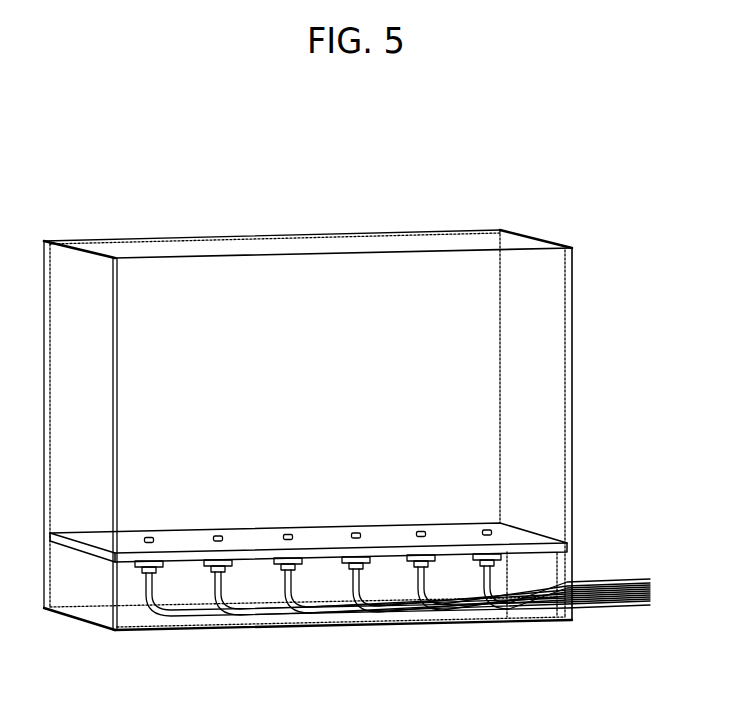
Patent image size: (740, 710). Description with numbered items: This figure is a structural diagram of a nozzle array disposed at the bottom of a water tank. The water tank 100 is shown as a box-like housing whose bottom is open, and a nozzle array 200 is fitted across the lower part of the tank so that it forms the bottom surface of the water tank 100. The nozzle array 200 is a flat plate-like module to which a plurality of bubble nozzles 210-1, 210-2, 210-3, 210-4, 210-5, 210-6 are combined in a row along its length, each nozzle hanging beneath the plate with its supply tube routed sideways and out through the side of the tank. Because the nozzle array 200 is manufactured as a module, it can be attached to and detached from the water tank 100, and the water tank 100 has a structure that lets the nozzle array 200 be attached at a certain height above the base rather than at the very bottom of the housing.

The water tank 100 is at (572, 316).
The nozzle array 200 is at (536, 515).
The bubble nozzle 210-1 is at (162, 577).
The bubble nozzle 210-2 is at (231, 576).
The bubble nozzle 210-3 is at (301, 574).
The bubble nozzle 210-4 is at (369, 573).
The bubble nozzle 210-5 is at (434, 571).
The bubble nozzle 210-6 is at (500, 570).